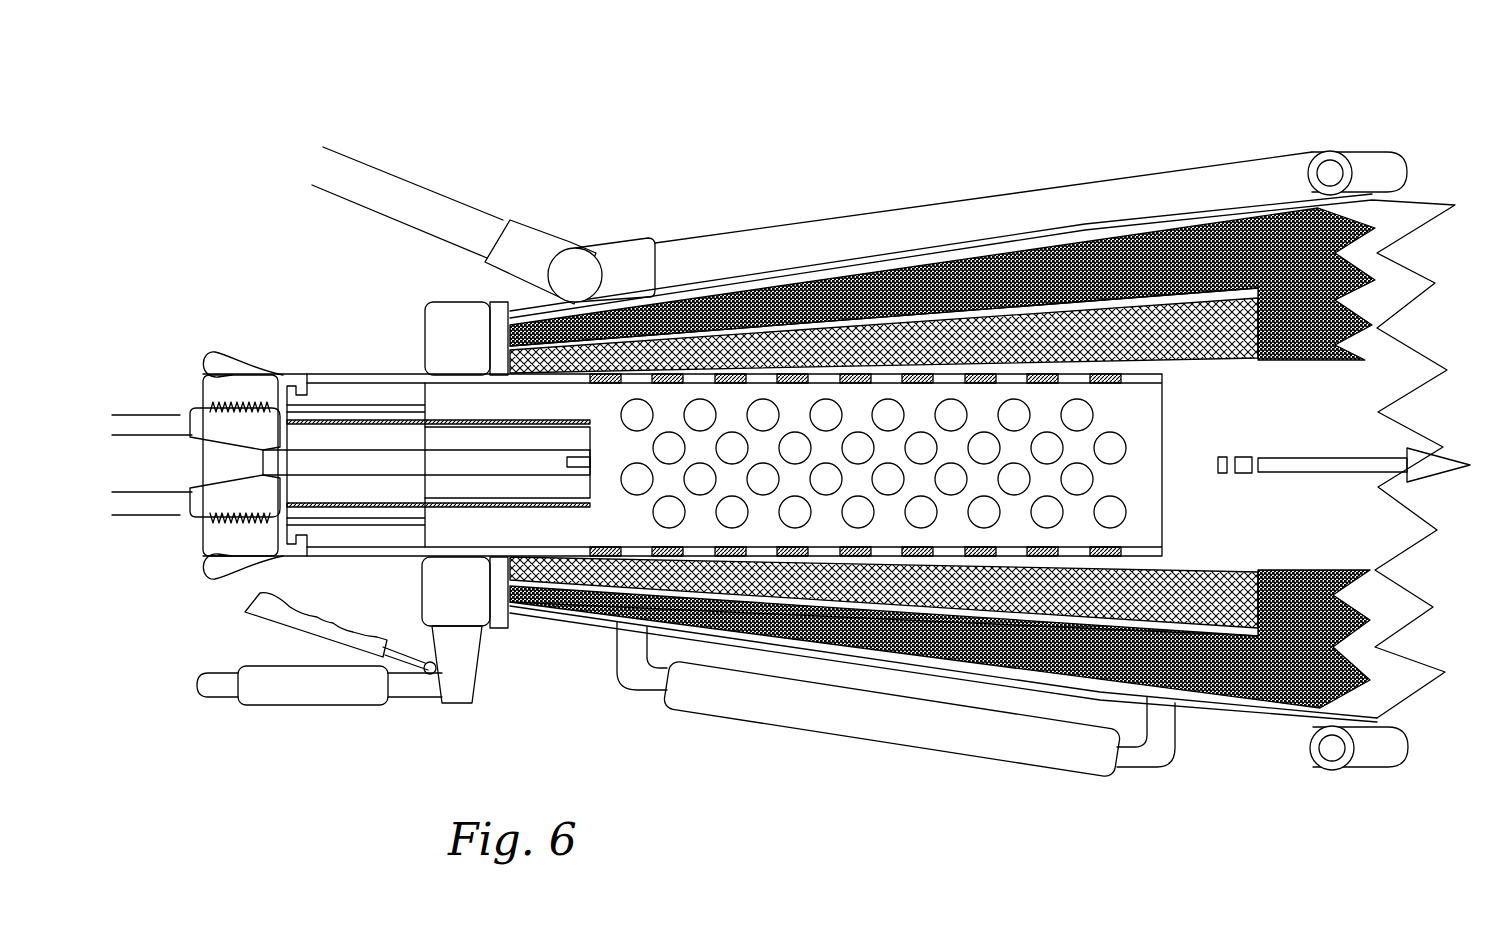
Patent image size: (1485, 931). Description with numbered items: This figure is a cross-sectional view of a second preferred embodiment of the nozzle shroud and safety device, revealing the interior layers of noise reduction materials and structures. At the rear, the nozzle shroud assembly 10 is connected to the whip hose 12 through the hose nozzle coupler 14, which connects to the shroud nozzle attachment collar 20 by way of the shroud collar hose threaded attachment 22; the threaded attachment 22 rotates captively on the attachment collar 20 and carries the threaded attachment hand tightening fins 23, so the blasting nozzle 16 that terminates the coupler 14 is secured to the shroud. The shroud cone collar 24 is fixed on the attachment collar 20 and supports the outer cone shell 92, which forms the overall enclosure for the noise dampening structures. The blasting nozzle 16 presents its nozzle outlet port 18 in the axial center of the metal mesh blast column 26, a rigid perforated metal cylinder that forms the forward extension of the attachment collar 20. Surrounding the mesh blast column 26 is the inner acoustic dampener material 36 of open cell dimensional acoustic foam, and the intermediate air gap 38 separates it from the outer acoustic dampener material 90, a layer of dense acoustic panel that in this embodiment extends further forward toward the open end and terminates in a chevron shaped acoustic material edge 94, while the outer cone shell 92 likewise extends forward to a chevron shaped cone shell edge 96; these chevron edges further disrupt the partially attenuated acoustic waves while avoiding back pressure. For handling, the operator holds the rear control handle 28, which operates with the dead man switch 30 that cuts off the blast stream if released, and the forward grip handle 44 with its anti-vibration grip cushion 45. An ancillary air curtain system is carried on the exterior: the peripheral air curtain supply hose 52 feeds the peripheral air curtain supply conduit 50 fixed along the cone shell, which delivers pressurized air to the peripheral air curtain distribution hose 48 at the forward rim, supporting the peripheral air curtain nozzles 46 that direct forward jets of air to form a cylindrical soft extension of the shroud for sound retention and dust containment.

The nozzle shroud assembly 10 is at (603, 103).
The whip hose 12 is at (132, 413).
The hose nozzle coupler 14 is at (207, 518).
The blasting nozzle 16 is at (460, 426).
The nozzle outlet port 18 is at (593, 465).
The shroud nozzle attachment collar 20 is at (400, 386).
The shroud collar hose threaded attachment 22 is at (280, 565).
The threaded attachment hand tightening fins 23 is at (215, 352).
The shroud cone collar 24 is at (452, 302).
The metal mesh blast column 26 is at (1163, 480).
The rear control handle 28 is at (217, 700).
The dead man switch 30 is at (270, 627).
The inner acoustic dampener material 36 is at (989, 330).
The intermediate air gap 38 is at (1076, 302).
The forward grip handle 44 is at (647, 695).
The anti-vibration grip cushion 45 is at (971, 758).
The peripheral air curtain nozzles 46 is at (1358, 150).
The peripheral air curtain distribution hose 48 is at (1335, 152).
The peripheral air curtain supply conduit 50 is at (762, 227).
The peripheral air curtain supply hose 52 is at (425, 185).
The outer acoustic dampener material 90 is at (1154, 258).
The outer cone shell 92 is at (1235, 206).
The chevron shaped acoustic material edge 94 is at (1357, 613).
The chevron shaped cone shell edge 96 is at (1432, 217).